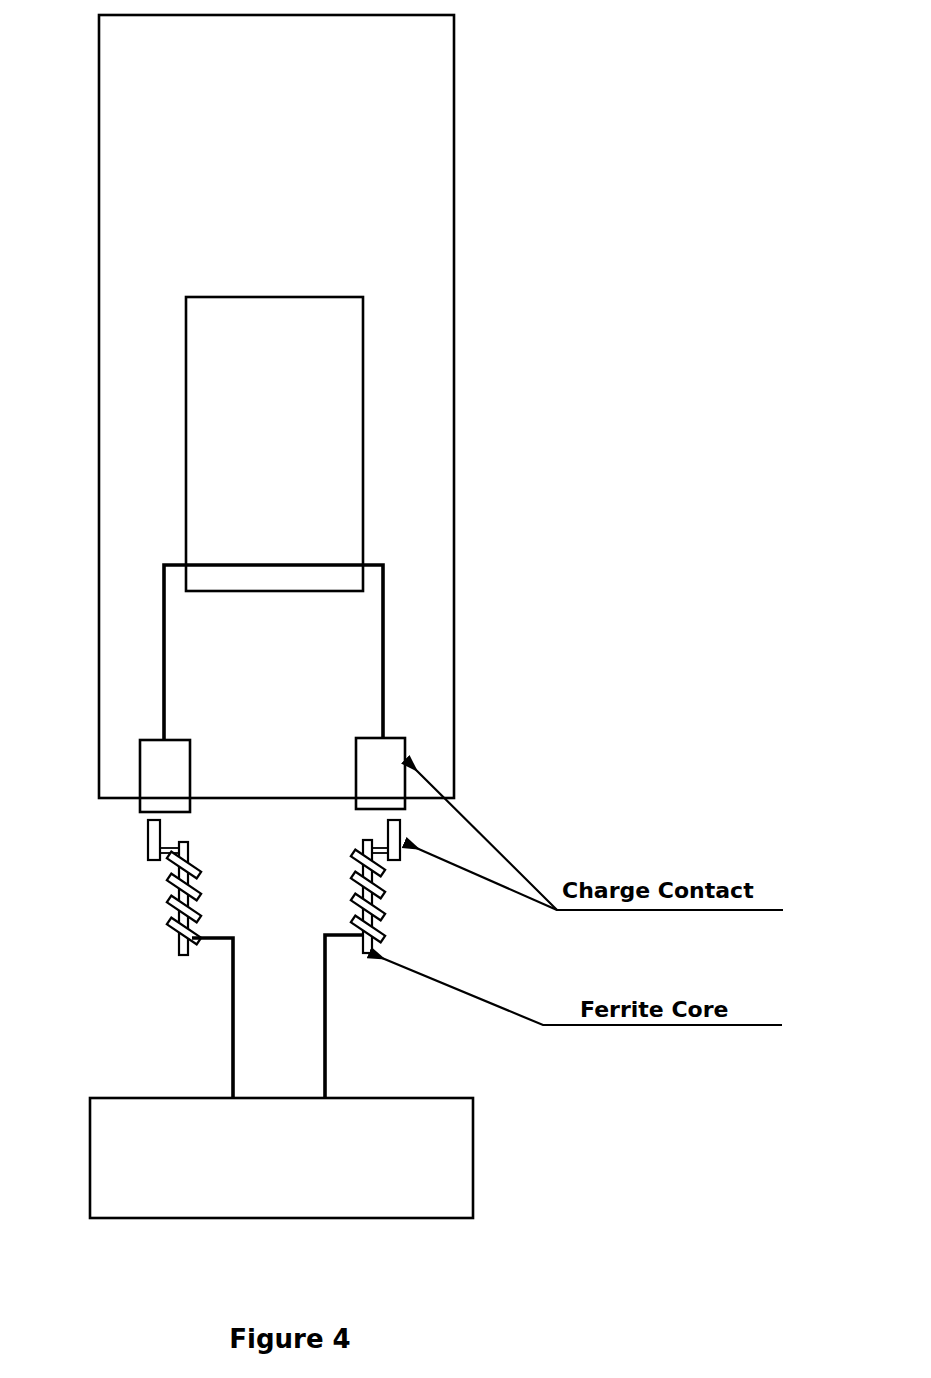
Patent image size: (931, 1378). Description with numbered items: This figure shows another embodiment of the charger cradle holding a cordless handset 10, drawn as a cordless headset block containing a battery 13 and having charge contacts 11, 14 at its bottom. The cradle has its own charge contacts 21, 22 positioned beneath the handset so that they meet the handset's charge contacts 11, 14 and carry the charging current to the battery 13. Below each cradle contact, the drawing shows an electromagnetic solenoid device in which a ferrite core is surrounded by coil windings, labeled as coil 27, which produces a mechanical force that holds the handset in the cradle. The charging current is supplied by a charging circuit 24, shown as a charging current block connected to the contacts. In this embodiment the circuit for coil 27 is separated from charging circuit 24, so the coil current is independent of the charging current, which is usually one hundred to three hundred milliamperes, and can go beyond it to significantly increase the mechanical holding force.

The cordless handset 10 is at (445, 403).
The charge contacts 11 is at (382, 755).
The battery 13 is at (222, 389).
The charge contact 14 is at (158, 765).
The charge contacts 21 is at (147, 840).
The ferrite core 22 is at (402, 826).
The charging circuit 24 is at (463, 1192).
The coil 27 is at (378, 893).